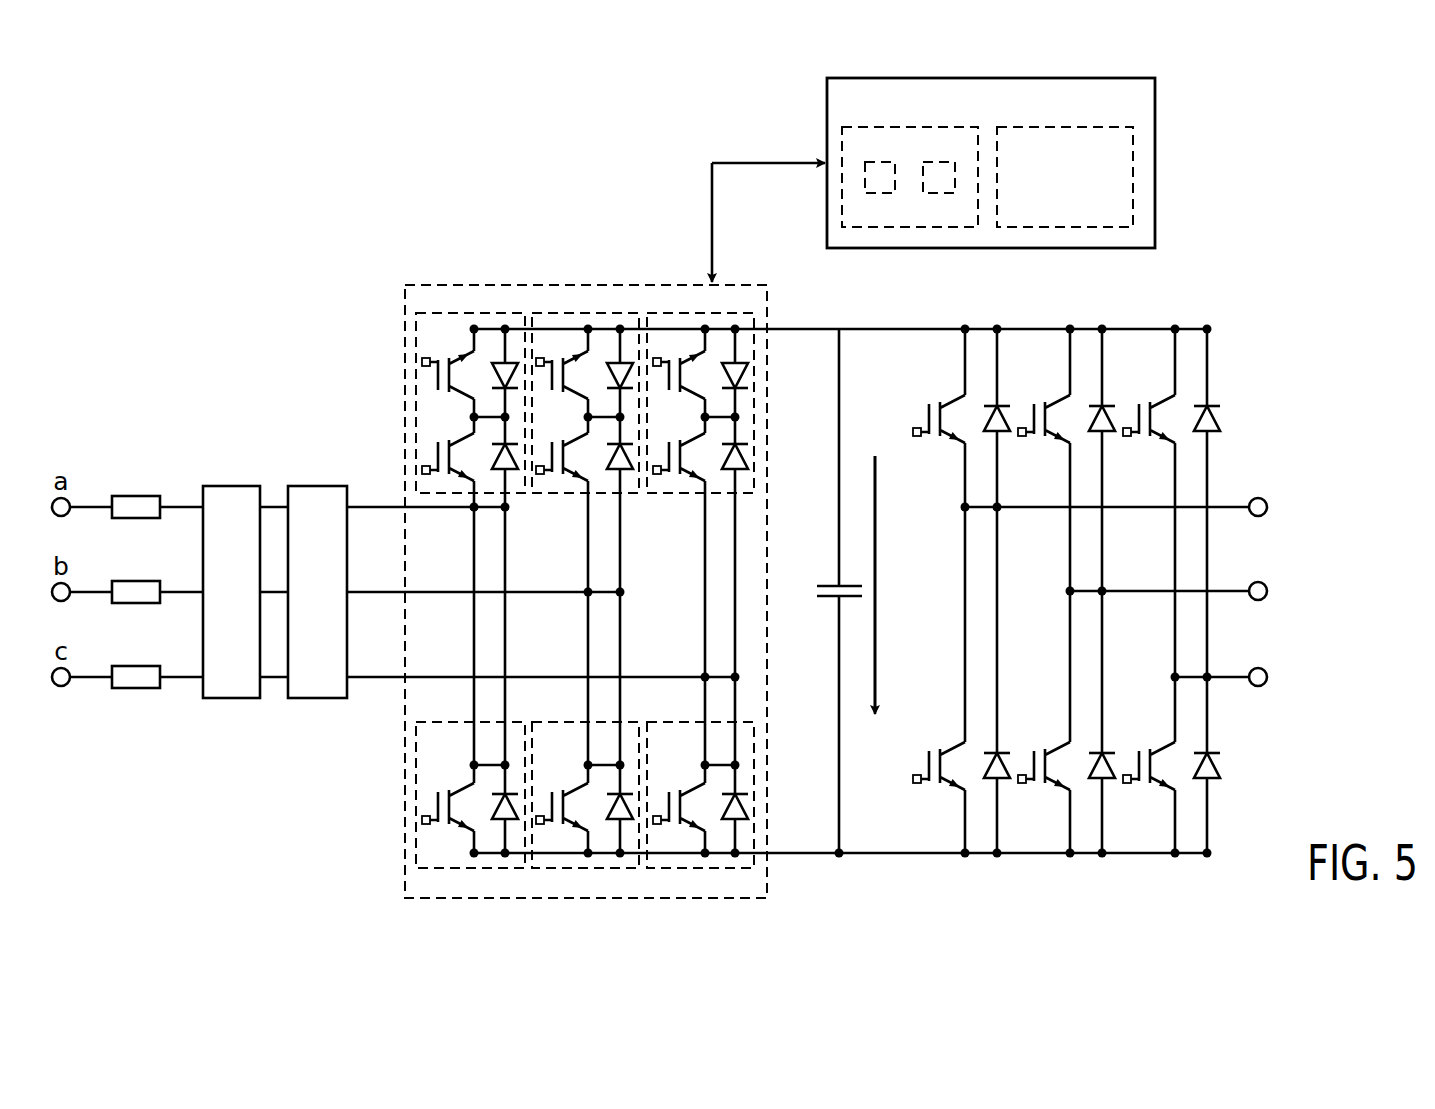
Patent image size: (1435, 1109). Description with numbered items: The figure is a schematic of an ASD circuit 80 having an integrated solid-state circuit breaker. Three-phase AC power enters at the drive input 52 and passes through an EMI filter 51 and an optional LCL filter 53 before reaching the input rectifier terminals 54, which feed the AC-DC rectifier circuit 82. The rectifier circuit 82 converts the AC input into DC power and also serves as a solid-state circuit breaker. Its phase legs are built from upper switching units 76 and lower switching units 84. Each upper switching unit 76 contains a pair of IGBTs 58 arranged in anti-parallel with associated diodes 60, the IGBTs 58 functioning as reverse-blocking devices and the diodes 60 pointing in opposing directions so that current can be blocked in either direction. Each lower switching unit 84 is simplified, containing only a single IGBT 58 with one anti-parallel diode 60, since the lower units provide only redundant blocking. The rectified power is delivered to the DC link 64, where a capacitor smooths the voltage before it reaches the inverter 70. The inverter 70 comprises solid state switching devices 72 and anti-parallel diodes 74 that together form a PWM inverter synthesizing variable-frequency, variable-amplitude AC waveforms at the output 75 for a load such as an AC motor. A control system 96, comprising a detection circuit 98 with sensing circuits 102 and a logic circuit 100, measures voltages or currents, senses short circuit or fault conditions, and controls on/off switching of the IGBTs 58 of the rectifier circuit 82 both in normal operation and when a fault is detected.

The EMI filter 51 is at (226, 486).
The drive input 52 is at (87, 496).
The LCL filter 53 is at (310, 486).
The input rectifier terminals 54 is at (600, 586).
The IGBT 58 is at (460, 786).
The diode 60 is at (500, 820).
The DC link 64 is at (805, 856).
The inverter 70 is at (1083, 551).
The solid state switching device 72 is at (953, 395).
The anti-parallel diode 74 is at (1002, 406).
The output 75 is at (1286, 534).
The upper switching unit 76 is at (480, 311).
The ASD circuit 80 is at (1196, 211).
The AC-DC rectifier circuit 82 is at (606, 282).
The lower switching unit 84 is at (582, 830).
The control system 96 is at (992, 175).
The detection circuit 98 is at (885, 219).
The logic circuit 100 is at (1105, 127).
The sensing circuit 102 is at (865, 177).